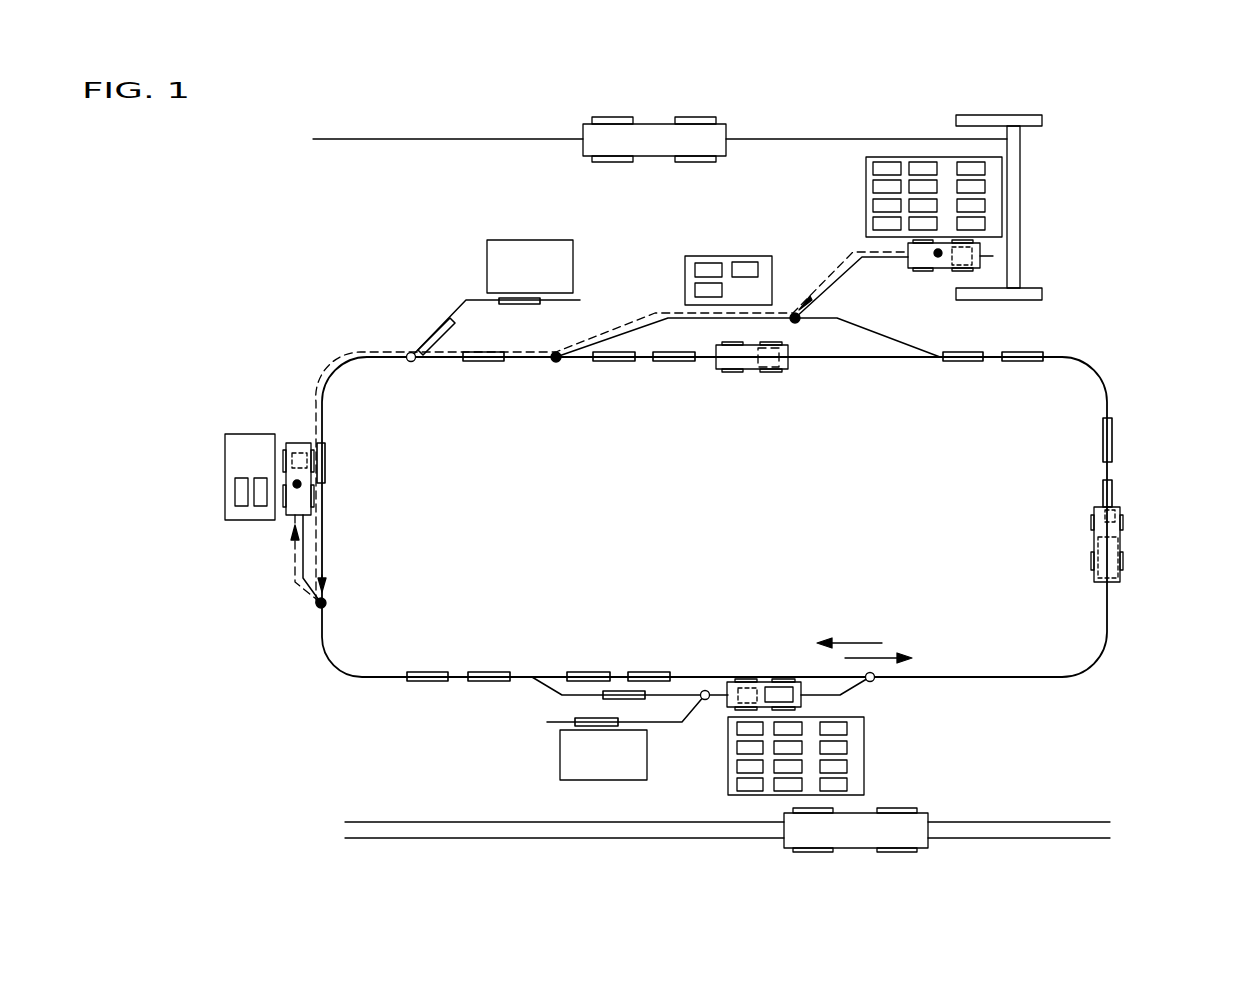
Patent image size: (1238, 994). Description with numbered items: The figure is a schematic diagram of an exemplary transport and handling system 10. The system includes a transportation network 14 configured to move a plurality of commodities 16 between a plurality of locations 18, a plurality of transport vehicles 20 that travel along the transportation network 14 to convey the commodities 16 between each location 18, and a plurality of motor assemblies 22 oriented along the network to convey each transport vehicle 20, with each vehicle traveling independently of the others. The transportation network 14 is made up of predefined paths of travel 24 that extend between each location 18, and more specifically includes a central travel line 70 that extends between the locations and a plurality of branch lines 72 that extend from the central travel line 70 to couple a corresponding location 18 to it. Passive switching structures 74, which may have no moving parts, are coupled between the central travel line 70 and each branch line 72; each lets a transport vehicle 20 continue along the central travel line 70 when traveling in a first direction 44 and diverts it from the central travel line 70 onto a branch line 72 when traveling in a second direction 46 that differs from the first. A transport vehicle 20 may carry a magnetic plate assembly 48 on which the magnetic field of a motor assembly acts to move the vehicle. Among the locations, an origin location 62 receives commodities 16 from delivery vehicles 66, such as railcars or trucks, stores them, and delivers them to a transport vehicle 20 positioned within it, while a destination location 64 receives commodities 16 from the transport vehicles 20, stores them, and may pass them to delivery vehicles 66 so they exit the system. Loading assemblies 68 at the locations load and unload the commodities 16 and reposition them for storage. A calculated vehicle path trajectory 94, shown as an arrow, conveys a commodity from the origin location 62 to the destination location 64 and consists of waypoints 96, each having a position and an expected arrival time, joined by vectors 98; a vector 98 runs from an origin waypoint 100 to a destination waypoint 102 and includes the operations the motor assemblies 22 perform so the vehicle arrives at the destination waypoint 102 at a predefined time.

The transport and handling system 10 is at (1078, 294).
The transportation network 14 is at (1122, 389).
The commodities 16 is at (873, 185).
The locations 18 is at (563, 241).
The transport vehicles 20 is at (748, 372).
The motor assemblies 22 is at (520, 305).
The predefined paths of travel 24 is at (460, 308).
The first direction 44 is at (858, 640).
The second direction 46 is at (888, 655).
The magnetic plate assembly 48 is at (1121, 578).
The origin location 62 is at (910, 157).
The destination location 64 is at (228, 520).
The delivery vehicles 66 is at (657, 122).
The loading assemblies 68 is at (1021, 170).
The central travel line 70 is at (845, 360).
The branch lines 72 is at (470, 303).
The passive switching structures 74 is at (325, 598).
The vehicle path trajectory 94 is at (322, 372).
The waypoints 96 is at (557, 362).
The vectors 98 is at (365, 360).
The origin waypoint 100 is at (938, 262).
The destination waypoint 102 is at (302, 487).